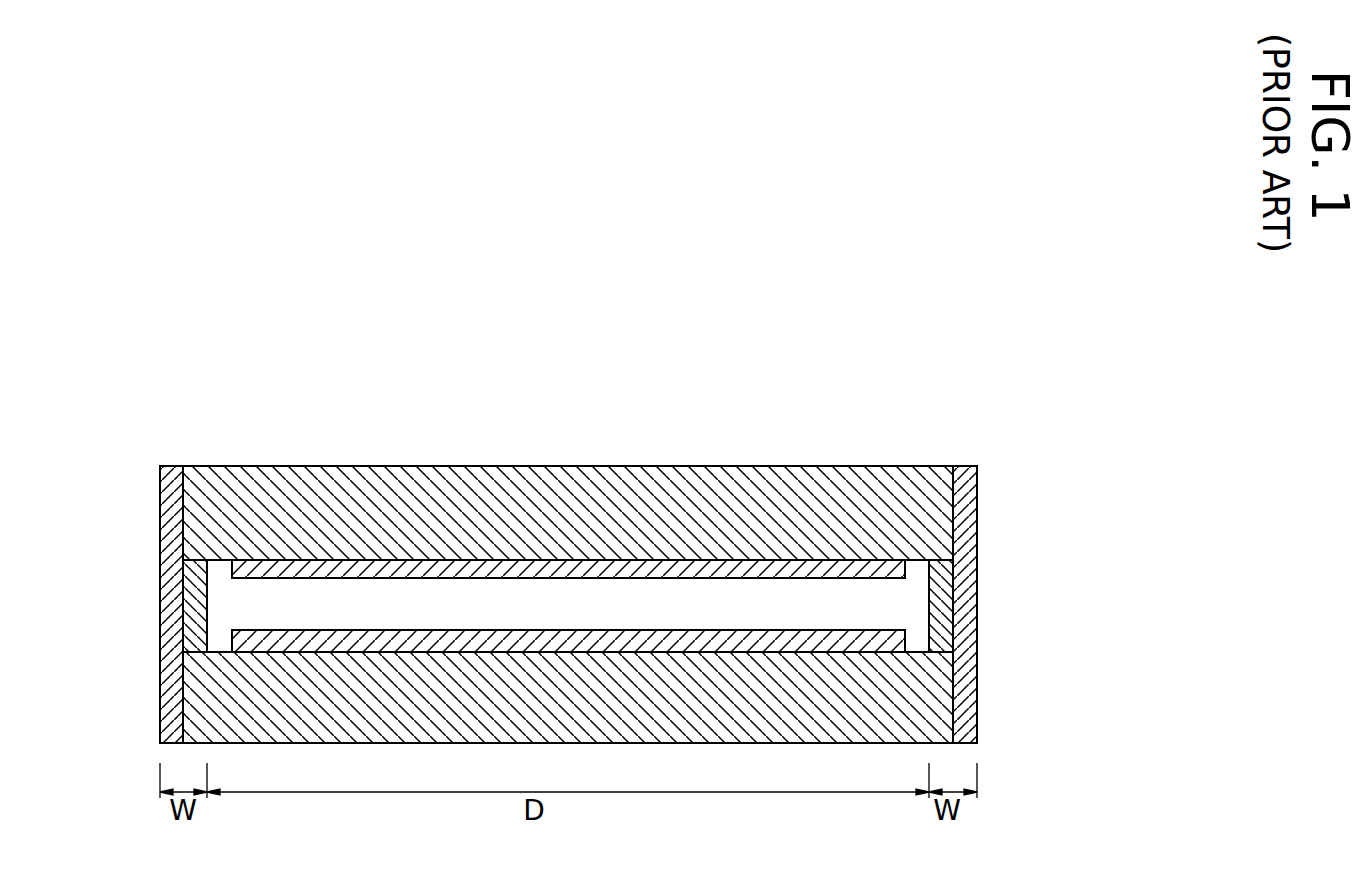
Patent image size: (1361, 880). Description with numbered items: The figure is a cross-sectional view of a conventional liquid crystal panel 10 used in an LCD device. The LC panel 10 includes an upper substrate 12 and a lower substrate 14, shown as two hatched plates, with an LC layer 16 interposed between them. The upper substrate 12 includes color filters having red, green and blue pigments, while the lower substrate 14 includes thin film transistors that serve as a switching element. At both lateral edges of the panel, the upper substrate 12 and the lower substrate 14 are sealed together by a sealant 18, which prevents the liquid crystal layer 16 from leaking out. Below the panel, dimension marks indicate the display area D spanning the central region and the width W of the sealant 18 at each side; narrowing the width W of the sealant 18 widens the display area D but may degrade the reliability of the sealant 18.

The LC panel 10 is at (903, 327).
The upper substrate 12 is at (877, 492).
The lower substrate 14 is at (860, 745).
The LC layer 16 is at (455, 610).
The sealant 18 is at (193, 608).